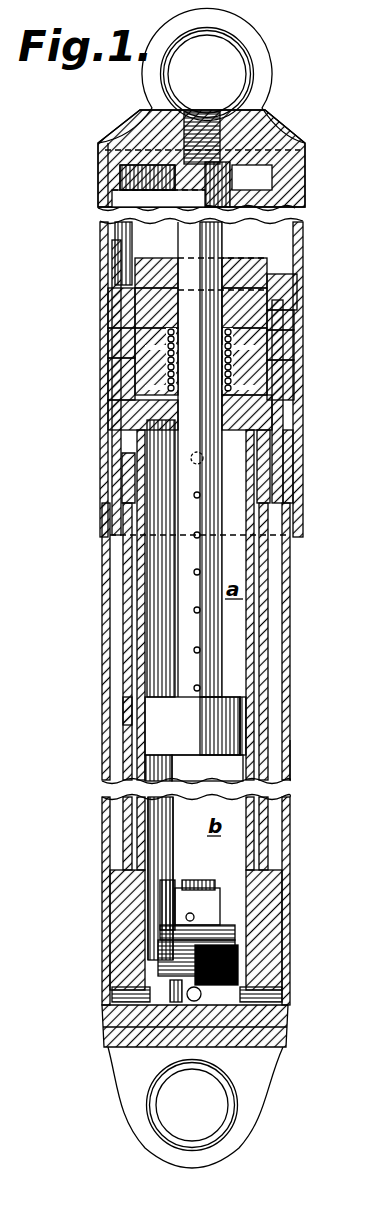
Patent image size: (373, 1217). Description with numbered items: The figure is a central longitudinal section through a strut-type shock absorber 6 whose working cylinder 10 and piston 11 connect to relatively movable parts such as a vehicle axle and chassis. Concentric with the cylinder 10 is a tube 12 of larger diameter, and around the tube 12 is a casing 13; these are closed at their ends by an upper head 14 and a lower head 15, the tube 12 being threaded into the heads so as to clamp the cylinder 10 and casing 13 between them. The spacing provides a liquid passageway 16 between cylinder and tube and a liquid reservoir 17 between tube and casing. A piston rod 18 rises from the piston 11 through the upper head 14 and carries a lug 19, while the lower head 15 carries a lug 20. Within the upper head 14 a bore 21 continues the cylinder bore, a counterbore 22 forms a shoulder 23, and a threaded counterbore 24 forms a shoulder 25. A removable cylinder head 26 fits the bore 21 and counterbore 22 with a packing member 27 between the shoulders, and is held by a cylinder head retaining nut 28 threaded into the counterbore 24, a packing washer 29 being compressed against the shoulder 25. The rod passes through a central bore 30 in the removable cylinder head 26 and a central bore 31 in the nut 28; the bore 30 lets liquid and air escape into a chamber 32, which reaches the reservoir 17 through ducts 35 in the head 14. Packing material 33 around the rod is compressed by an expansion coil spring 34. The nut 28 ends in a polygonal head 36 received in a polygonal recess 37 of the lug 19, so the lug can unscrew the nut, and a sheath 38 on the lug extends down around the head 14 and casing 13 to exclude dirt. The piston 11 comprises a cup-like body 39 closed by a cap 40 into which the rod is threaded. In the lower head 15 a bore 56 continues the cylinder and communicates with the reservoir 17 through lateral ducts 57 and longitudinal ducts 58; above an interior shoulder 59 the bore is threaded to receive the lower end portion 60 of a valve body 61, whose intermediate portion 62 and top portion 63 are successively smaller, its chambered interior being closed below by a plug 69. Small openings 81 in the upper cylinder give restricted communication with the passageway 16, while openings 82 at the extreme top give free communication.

The shock absorber 6 is at (329, 757).
The working cylinder 10 is at (250, 590).
The piston 11 is at (248, 713).
The tube 12 is at (265, 655).
The casing 13 is at (287, 772).
The upper head 14 is at (120, 412).
The lower head 15 is at (118, 905).
The liquid passageway 16 is at (135, 585).
The liquid reservoir 17 is at (120, 708).
The piston rod 18 is at (196, 520).
The lug 19 is at (265, 133).
The lug 20 is at (130, 1060).
The bore 21 is at (272, 412).
The counterbore 22 is at (285, 340).
The shoulder 23 is at (285, 392).
The counterbore 24 is at (278, 298).
The shoulder 25 is at (274, 318).
The removable cylinder head 26 is at (120, 392).
The packing member 27 is at (116, 382).
The cylinder head retaining nut 28 is at (120, 297).
The packing washer 29 is at (120, 320).
The central bore 30 is at (116, 437).
The central bore 31 is at (240, 262).
The chamber 32 is at (283, 372).
The packing material 33 is at (118, 275).
The expansion coil spring 34 is at (120, 343).
The ducts 35 is at (283, 440).
The polygonal head 36 is at (244, 260).
The polygonal recess 37 is at (140, 170).
The sheath 38 is at (104, 486).
The cup-like body 39 is at (189, 751).
The cap 40 is at (193, 700).
The bore 56 is at (235, 905).
The lateral ducts 57 is at (118, 1000).
The longitudinal ducts 58 is at (118, 948).
The shoulder 59 is at (118, 965).
The lower end portion 60 is at (258, 966).
The valve body 61 is at (168, 900).
The intermediate portion 62 is at (232, 926).
The top portion 63 is at (222, 896).
The plug 69 is at (215, 999).
The small openings 81 is at (205, 555).
The openings 82 is at (283, 466).